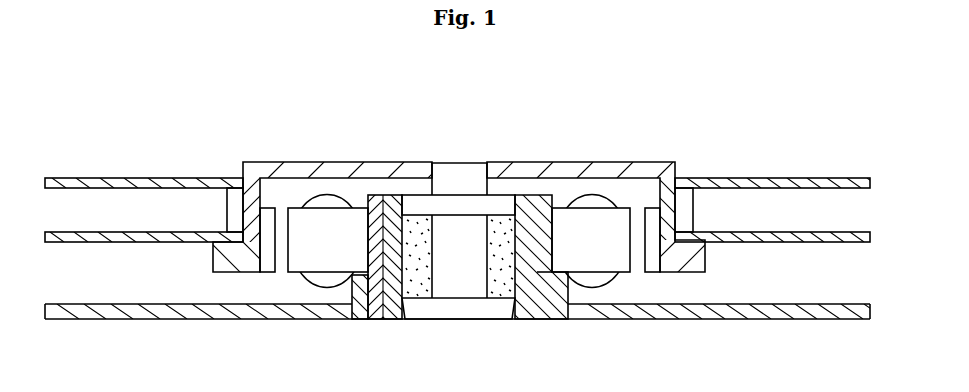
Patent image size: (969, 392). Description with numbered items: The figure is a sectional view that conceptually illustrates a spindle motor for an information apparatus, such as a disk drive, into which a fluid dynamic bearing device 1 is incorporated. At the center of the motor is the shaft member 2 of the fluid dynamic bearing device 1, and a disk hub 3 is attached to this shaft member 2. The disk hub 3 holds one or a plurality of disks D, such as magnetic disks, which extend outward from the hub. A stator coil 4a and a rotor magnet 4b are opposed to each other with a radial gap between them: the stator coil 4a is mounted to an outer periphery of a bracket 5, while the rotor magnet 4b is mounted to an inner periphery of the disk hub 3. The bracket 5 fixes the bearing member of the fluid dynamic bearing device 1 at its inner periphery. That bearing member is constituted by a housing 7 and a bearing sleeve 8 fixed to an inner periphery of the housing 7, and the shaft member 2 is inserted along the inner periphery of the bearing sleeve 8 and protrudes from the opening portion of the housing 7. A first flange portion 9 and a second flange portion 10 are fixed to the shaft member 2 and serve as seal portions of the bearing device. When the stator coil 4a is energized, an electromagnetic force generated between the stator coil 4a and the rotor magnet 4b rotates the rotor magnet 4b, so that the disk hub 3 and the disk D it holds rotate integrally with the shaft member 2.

The fluid dynamic bearing device 1 is at (519, 192).
The shaft member 2 is at (473, 160).
The disk hub 3 is at (650, 172).
The stator coil 4a is at (601, 289).
The rotor magnet 4b is at (653, 268).
The bracket 5 is at (550, 313).
The housing 7 is at (388, 202).
The bearing sleeve 8 is at (498, 222).
The first flange portion 9 is at (415, 205).
The second flange portion 10 is at (480, 312).
The disk D is at (797, 177).